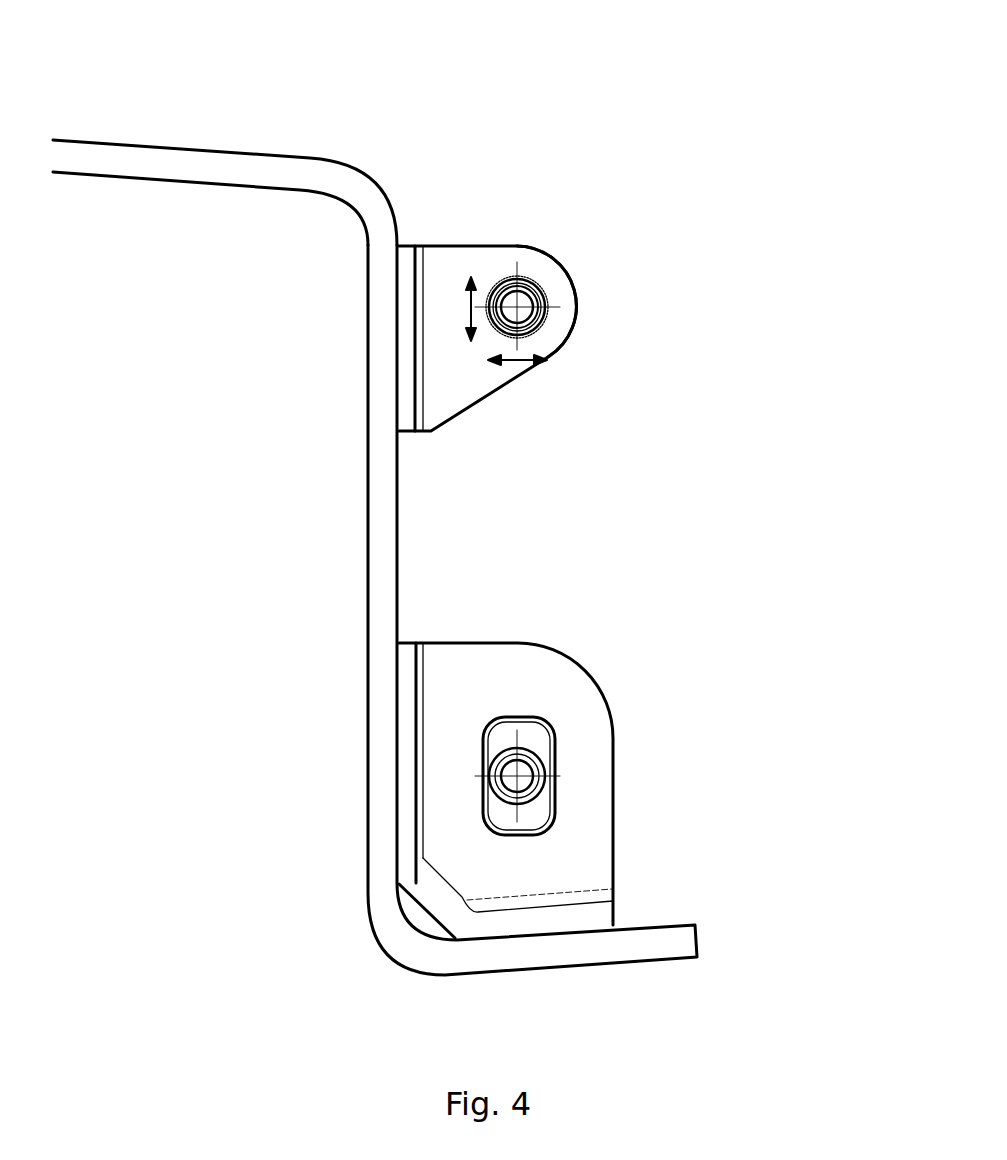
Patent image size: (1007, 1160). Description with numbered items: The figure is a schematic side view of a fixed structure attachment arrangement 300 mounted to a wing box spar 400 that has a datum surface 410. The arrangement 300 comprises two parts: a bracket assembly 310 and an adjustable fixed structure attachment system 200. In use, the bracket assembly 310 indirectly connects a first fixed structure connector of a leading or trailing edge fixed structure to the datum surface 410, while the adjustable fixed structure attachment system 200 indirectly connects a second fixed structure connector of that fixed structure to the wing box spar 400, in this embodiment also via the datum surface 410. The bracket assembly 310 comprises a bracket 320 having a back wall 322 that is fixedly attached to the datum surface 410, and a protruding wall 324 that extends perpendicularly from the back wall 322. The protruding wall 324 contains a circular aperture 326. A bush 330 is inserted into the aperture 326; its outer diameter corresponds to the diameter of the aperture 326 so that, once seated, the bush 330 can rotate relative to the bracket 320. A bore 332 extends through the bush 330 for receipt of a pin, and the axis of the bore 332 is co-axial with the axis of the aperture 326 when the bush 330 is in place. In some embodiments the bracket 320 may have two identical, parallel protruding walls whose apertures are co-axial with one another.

The adjustable fixed structure attachment system 200 is at (633, 818).
The fixed structure attachment arrangement 300 is at (683, 520).
The bracket assembly 310 is at (700, 163).
The bracket 320 is at (591, 264).
The back wall 322 is at (405, 247).
The protruding wall 324 is at (557, 277).
The circular aperture 326 is at (547, 307).
The bush 330 is at (547, 325).
The bore 332 is at (547, 312).
The wing box spar 400 is at (295, 167).
The datum surface 410 is at (398, 472).